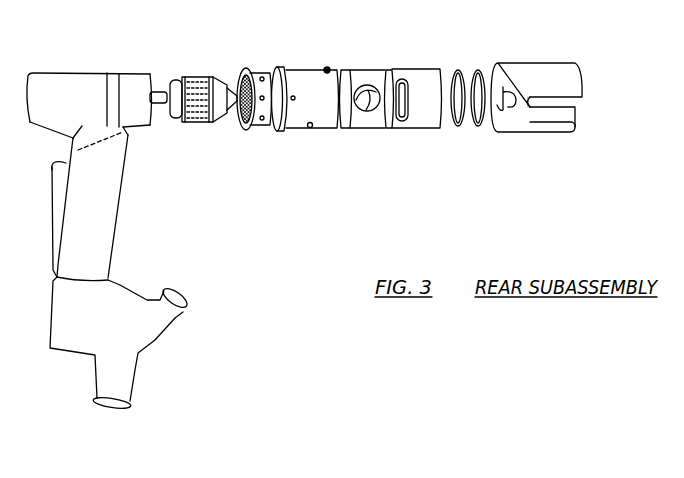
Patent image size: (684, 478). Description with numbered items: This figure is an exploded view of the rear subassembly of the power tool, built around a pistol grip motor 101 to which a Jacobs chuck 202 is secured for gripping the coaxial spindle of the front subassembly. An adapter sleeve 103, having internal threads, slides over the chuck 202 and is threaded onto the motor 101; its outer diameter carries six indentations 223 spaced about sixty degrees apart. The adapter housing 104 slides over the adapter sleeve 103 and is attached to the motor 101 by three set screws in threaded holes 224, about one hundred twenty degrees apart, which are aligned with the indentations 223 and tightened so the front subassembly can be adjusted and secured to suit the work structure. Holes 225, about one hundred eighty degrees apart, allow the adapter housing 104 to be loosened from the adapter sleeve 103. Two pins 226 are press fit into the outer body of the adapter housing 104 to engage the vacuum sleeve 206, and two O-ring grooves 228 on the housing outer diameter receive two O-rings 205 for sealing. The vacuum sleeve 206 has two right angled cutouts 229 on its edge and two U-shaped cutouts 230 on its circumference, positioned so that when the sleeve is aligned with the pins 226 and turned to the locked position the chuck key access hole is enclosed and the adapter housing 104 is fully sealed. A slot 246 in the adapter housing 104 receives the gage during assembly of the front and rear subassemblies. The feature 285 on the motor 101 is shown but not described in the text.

The pistol grip motor 101 is at (108, 241).
The adapter sleeve 103 is at (247, 67).
The adapter housing 104 is at (366, 69).
The Jacobs chuck 202 is at (195, 76).
The O-rings 205 is at (476, 69).
The vacuum sleeve 206 is at (532, 101).
The indentations 223 is at (257, 127).
The threaded holes 224 is at (284, 128).
The holes 225 is at (310, 127).
The pins 226 is at (328, 67).
The O-ring grooves 228 is at (388, 129).
The right angled cutouts 229 is at (511, 110).
The U-shaped cutouts 230 is at (528, 104).
The slot 246 is at (399, 126).
The port opening 285 is at (164, 289).